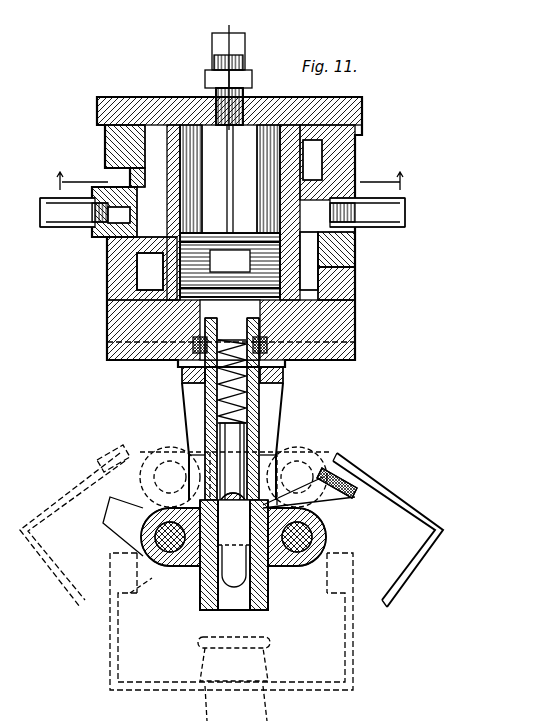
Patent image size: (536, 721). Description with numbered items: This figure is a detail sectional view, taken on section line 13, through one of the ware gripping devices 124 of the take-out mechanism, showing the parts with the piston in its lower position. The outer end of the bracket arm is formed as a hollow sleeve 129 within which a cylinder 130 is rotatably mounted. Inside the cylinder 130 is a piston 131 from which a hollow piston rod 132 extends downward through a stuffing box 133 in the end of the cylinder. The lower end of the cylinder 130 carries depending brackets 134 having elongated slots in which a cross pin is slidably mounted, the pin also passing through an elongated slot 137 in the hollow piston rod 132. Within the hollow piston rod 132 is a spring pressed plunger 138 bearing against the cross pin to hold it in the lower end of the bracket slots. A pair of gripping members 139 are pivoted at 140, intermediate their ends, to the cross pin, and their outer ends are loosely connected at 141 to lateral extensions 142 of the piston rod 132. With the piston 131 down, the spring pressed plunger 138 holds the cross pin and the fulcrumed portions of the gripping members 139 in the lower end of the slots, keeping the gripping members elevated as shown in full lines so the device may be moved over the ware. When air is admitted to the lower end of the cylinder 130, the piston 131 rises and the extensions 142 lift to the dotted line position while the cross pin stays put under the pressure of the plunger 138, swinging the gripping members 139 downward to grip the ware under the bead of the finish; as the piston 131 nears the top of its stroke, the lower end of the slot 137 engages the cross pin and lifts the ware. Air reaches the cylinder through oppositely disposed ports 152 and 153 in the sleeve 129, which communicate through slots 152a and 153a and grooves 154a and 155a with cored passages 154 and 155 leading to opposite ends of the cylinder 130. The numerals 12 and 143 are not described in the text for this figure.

The adjusting bolt / pin 12 is at (228, 272).
The section line 13 is at (232, 181).
The ware gripping device 124 is at (398, 504).
The hollow sleeve 129 is at (110, 281).
The cylinder 130 is at (360, 134).
The piston 131 is at (233, 212).
The hollow piston rod 132 is at (262, 402).
The stuffing box 133 is at (182, 379).
The depending bracket 134 is at (192, 396).
The elongated slot 137 is at (252, 583).
The spring pressed plunger 138 is at (246, 436).
The gripping member 139 is at (322, 457).
The pivot 140 is at (335, 504).
The loose connection 141 is at (143, 535).
The lateral extension 142 is at (132, 547).
The frame 143 is at (200, 567).
The port 152 is at (96, 232).
The slot 152a is at (100, 191).
The port 153 is at (363, 226).
The slot 153a is at (320, 252).
The cored passage 154 is at (140, 136).
The groove 154a is at (135, 176).
The cored passage 155 is at (336, 300).
The groove 155a is at (330, 262).